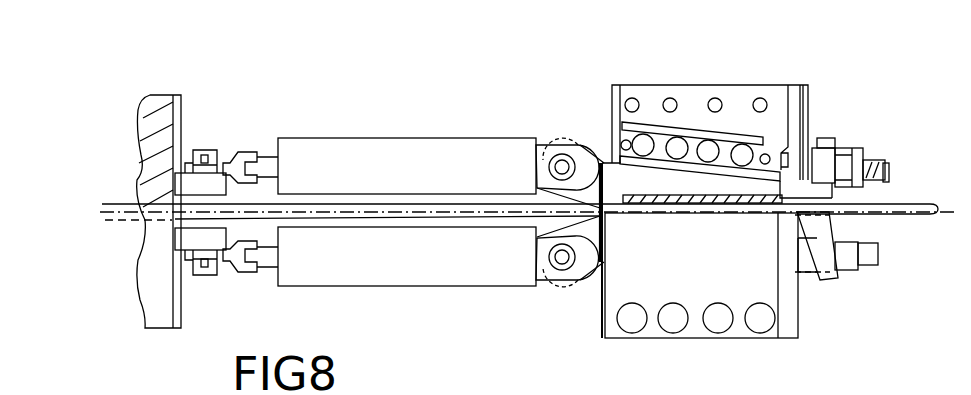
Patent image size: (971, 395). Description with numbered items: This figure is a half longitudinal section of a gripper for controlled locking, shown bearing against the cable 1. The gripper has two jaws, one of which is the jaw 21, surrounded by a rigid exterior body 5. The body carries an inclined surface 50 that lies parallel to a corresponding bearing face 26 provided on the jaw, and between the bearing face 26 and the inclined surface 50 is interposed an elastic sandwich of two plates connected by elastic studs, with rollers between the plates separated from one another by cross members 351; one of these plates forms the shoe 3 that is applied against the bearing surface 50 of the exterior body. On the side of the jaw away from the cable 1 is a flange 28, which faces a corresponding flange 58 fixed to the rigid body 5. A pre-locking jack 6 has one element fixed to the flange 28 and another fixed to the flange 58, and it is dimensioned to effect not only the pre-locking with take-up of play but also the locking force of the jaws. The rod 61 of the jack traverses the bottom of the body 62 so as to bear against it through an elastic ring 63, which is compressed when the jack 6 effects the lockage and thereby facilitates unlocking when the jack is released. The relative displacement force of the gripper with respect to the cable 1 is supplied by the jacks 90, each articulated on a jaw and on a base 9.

The cable 1 is at (917, 213).
The shoe 3 is at (730, 152).
The rigid exterior body 5 is at (633, 90).
The pre-locking jack 6 is at (867, 150).
The base 9 is at (160, 120).
The jaw 21 is at (614, 176).
The bearing face 26 is at (722, 152).
The flange 28 is at (835, 150).
The inclined surface 50 is at (628, 108).
The flange 58 is at (800, 165).
The rod 61 is at (818, 138).
The body 62 is at (887, 158).
The elastic ring 63 is at (888, 180).
The jack 90 is at (348, 158).
The cross member 351 is at (672, 140).